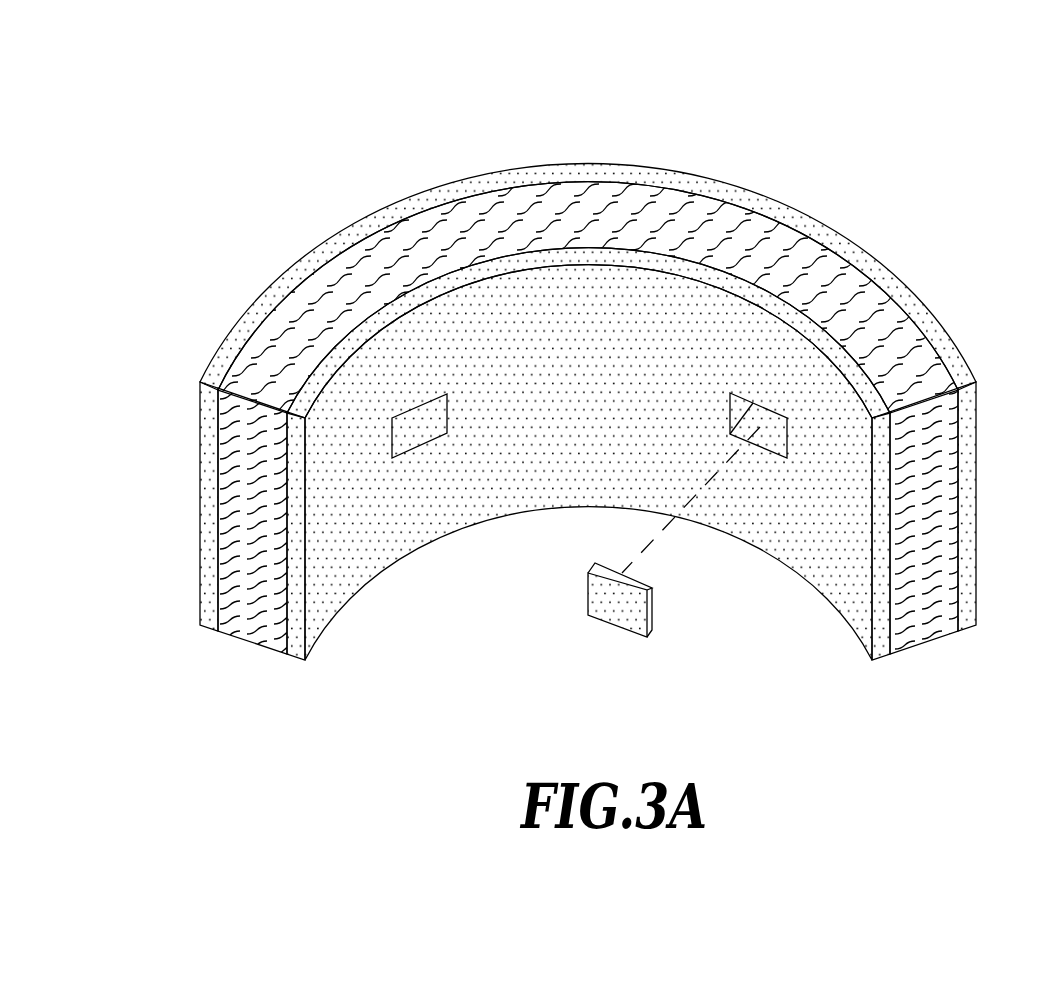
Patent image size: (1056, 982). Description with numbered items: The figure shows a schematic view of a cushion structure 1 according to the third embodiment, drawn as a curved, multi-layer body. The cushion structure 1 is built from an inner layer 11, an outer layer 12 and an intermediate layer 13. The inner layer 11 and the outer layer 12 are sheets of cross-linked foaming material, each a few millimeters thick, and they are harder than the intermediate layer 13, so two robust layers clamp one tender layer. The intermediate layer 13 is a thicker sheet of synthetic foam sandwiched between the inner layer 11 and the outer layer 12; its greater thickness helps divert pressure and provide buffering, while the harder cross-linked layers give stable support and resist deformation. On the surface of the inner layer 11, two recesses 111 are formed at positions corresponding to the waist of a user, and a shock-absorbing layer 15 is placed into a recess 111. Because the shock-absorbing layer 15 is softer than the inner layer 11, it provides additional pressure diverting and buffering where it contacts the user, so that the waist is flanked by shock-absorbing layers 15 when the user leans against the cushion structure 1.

The cushion structure 1 is at (616, 410).
The inner layer 11 is at (303, 660).
The outer layer 12 is at (207, 627).
The intermediate layer 13 is at (253, 640).
The recess 111 is at (765, 455).
The shock-absorbing layer 15 is at (608, 617).